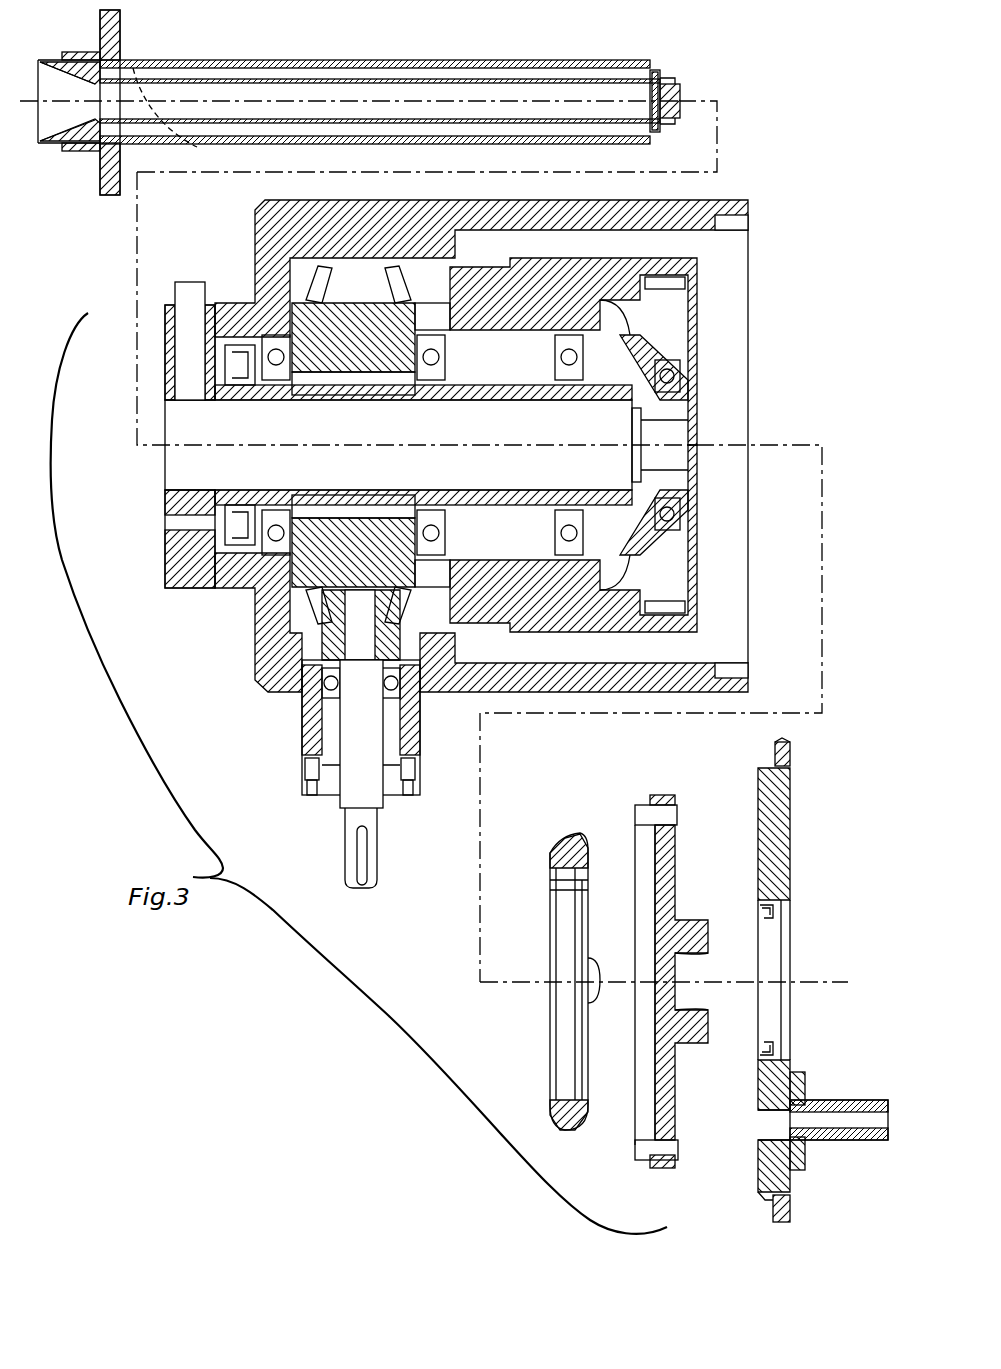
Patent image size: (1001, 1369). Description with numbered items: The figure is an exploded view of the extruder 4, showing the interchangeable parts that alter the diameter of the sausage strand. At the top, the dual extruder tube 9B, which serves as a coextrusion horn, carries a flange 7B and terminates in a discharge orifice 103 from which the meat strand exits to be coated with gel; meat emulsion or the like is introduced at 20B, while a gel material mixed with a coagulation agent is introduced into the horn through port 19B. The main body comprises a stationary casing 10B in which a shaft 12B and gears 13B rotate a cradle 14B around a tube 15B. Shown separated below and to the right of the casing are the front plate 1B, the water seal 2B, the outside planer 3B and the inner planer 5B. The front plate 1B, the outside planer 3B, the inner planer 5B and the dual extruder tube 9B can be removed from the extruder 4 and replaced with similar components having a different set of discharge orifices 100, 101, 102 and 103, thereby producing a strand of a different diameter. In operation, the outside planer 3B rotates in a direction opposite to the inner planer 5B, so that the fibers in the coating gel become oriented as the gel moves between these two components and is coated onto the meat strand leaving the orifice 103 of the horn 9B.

The flange 7B is at (121, 28).
The meat emulsion inlet 20B is at (136, 72).
The dual extruder tube 9B is at (680, 90).
The discharge orifice 103 is at (568, 62).
The port 19B is at (191, 284).
The casing 10B is at (748, 230).
The extruder 4 is at (757, 262).
The cradle 14B is at (643, 259).
The tube 15B is at (166, 492).
The gears 13B is at (266, 645).
The shaft 12B is at (357, 738).
The water seal 2B is at (786, 770).
The front plate 1B is at (790, 896).
The discharge orifice 102 is at (793, 957).
The outside planer 3B is at (678, 882).
The discharge orifice 101 is at (700, 952).
The inner planer 5B is at (554, 928).
The discharge orifice 100 is at (584, 972).